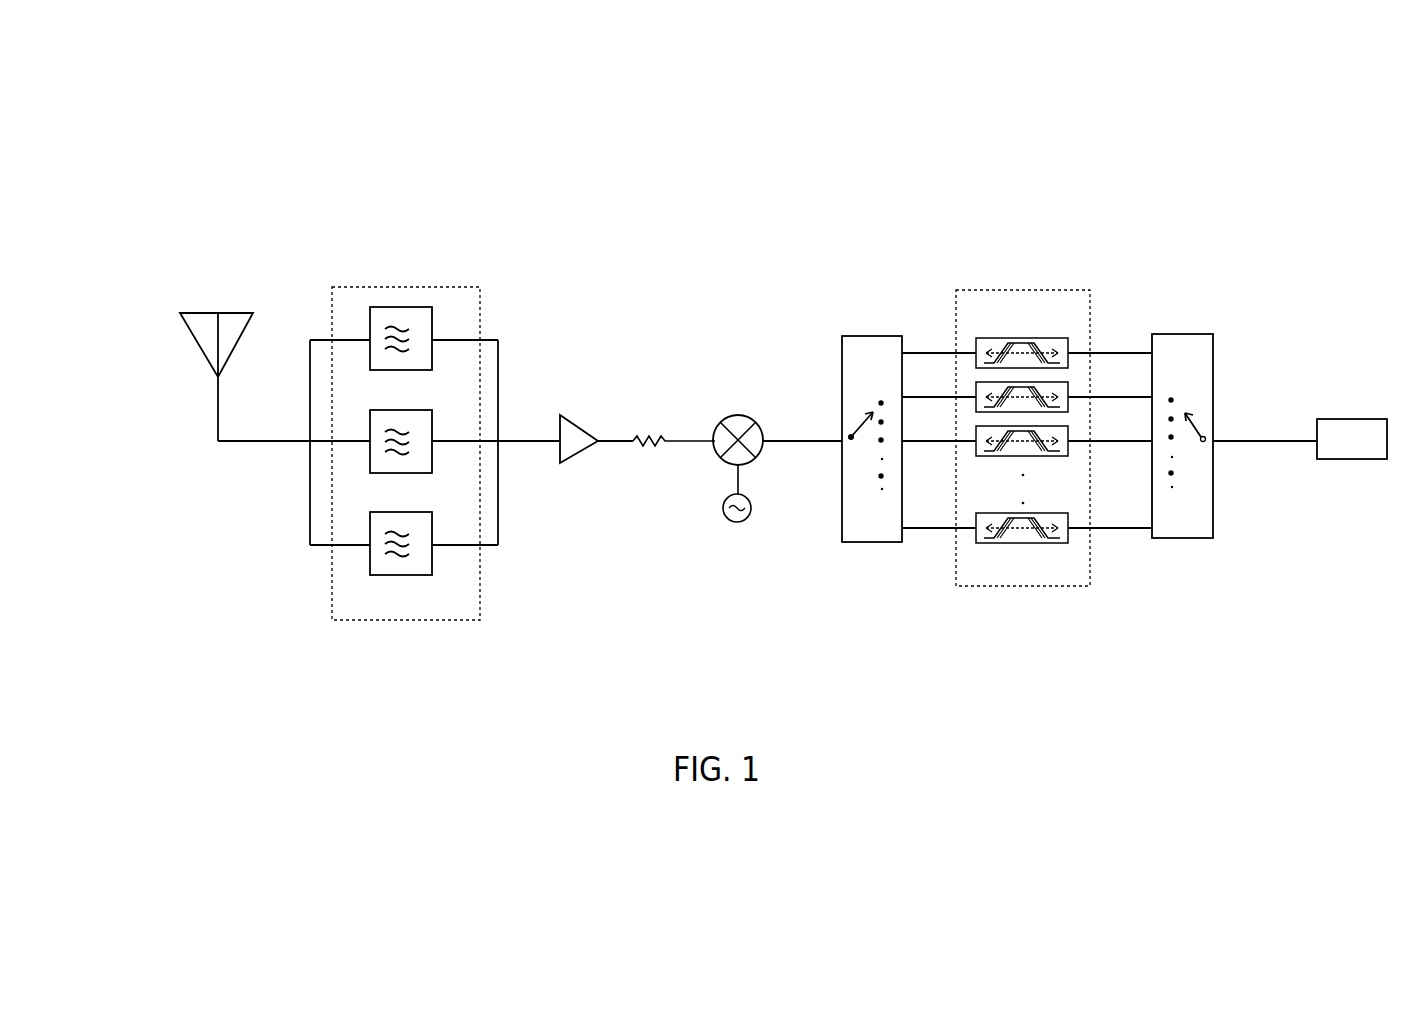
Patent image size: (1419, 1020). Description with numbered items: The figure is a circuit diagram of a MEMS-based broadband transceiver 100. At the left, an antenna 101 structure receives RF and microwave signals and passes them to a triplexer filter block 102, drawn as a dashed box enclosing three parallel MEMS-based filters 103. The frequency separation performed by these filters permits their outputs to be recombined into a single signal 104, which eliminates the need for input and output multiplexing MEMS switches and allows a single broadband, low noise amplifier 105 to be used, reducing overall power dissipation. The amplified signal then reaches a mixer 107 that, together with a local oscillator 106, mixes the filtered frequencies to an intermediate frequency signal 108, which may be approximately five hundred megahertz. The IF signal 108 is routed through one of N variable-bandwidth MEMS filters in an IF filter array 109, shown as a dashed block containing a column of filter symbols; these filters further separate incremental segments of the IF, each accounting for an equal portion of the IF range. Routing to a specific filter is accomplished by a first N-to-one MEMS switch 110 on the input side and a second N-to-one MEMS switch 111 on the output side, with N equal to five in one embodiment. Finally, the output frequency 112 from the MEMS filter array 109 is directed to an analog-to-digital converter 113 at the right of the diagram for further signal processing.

The MEMS-based broadband transceiver 100 is at (181, 156).
The antenna 101 is at (193, 343).
The triplexer filter block 102 is at (389, 436).
The MEMS-based filter 103 is at (432, 366).
The single signal 104 is at (529, 440).
The low noise amplifier 105 is at (580, 457).
The local oscillator 106 is at (745, 522).
The mixer 107 is at (743, 415).
The intermediate frequency (IF) signal 108 is at (798, 440).
The IF filter array 109 is at (1012, 290).
The first N:1 MEMS switch 110 is at (870, 336).
The second N:1 MEMS switch 111 is at (1180, 334).
The output frequency 112 is at (1262, 440).
The analog-to-digital converter (ADC) 113 is at (1345, 459).